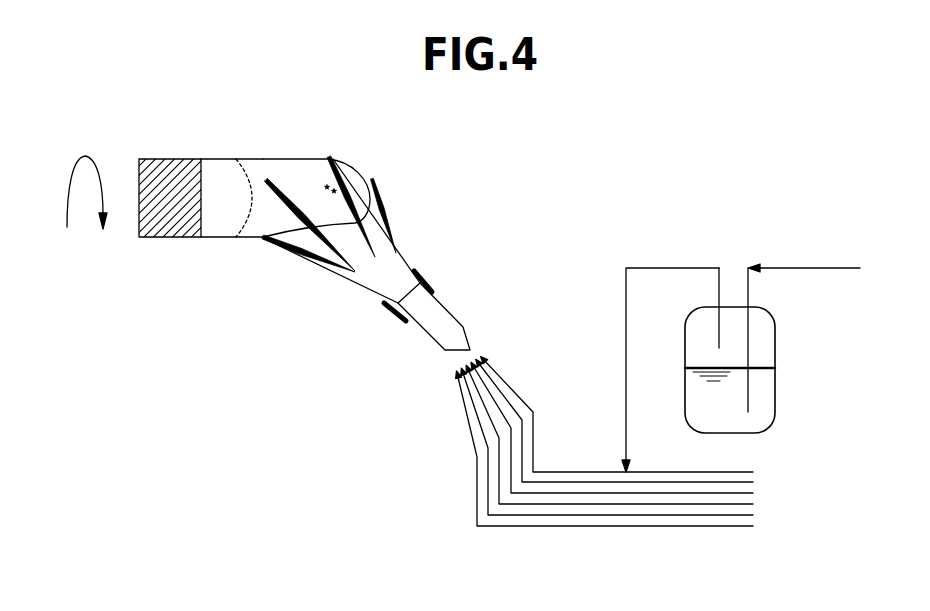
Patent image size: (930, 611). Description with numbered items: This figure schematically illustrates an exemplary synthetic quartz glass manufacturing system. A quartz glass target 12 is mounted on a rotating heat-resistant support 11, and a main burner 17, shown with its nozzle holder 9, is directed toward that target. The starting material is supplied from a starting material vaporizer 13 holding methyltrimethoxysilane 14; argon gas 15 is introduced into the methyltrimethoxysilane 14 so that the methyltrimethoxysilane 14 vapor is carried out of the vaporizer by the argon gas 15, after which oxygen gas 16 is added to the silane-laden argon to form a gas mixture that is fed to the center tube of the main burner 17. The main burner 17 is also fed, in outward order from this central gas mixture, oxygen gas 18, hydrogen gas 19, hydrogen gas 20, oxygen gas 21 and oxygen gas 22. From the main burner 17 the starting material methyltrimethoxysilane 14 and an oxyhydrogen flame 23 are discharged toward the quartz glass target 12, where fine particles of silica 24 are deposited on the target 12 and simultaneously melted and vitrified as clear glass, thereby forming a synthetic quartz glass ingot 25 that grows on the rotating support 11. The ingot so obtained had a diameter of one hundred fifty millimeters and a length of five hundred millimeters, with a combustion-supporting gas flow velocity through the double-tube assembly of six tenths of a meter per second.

The nozzle holder 9 is at (433, 285).
The rotating heat-resistant support 11 is at (163, 228).
The quartz glass target 12 is at (219, 228).
The starting material vaporizer 13 is at (777, 342).
The methyltrimethoxysilane 14 is at (763, 393).
The argon gas 15 is at (822, 334).
The oxygen gas 16 is at (753, 472).
The main burner 17 is at (427, 322).
The oxygen gas 18 is at (753, 482).
The hydrogen gas 19 is at (753, 493).
The hydrogen gas 20 is at (753, 504).
The oxygen gas 21 is at (753, 515).
The oxygen gas 22 is at (753, 526).
The oxyhydrogen flame 23 is at (392, 265).
The fine particles of silica 24 is at (322, 184).
The synthetic quartz glass ingot 25 is at (268, 173).